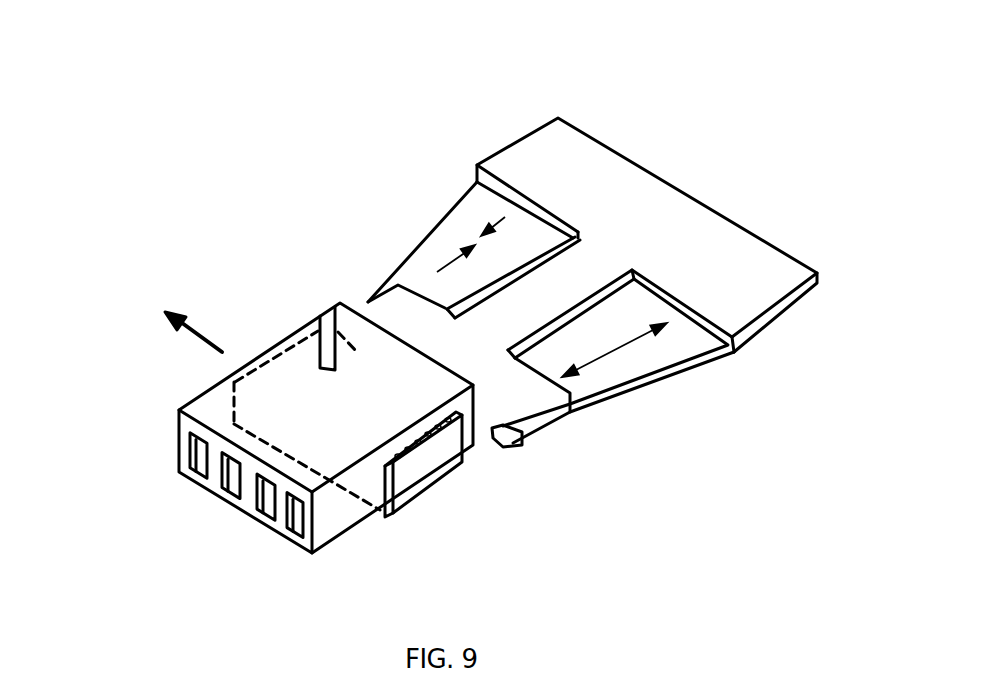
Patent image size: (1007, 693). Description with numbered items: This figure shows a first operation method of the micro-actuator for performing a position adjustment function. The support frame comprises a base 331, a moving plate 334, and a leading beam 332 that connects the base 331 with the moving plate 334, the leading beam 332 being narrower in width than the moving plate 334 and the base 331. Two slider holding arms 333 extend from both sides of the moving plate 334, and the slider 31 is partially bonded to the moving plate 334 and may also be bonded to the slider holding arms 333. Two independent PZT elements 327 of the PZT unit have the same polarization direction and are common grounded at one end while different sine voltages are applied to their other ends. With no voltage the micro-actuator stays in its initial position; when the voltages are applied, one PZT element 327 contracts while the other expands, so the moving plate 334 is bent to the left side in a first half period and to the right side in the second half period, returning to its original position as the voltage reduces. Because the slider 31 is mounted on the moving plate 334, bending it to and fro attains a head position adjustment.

The slider 31 is at (213, 405).
The PZT element 327 is at (470, 223).
The base 331 is at (671, 222).
The leading beam 332 is at (575, 285).
The slider holding arm 333 is at (417, 473).
The moving plate 334 is at (498, 394).